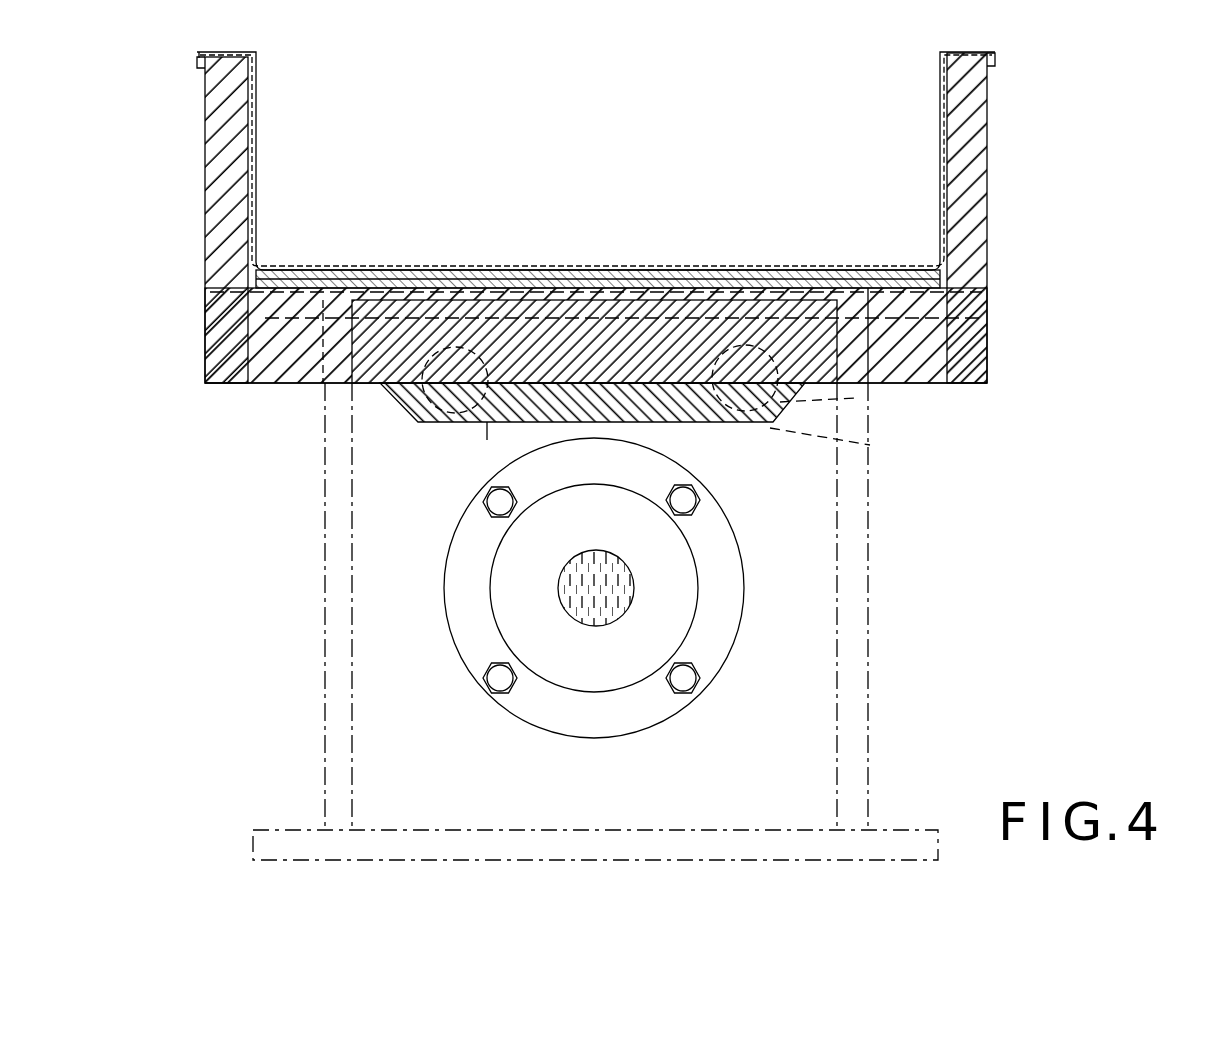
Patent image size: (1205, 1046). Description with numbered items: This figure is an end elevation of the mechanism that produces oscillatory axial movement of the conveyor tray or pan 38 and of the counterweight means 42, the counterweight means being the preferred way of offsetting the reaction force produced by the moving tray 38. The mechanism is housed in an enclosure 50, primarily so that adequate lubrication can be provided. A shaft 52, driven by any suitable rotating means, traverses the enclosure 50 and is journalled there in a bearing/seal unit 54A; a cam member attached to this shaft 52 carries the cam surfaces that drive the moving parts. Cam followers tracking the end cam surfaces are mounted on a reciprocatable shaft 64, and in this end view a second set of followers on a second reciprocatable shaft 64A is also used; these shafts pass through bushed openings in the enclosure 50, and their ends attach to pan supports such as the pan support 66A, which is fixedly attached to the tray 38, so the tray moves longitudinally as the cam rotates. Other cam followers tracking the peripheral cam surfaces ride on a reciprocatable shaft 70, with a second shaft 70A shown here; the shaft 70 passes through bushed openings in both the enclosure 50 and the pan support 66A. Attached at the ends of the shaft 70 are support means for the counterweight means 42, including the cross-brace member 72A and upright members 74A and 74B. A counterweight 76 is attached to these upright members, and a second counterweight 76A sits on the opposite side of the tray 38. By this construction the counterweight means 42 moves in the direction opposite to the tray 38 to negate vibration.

The conveyor tray or pan 38 is at (256, 135).
The counterweight means 42 is at (205, 300).
The enclosure 50 is at (872, 645).
The shaft 52 is at (581, 618).
The bearing/seal unit 54A is at (490, 598).
The reciprocatable shaft 64 is at (418, 422).
The reciprocatable shaft 64A is at (880, 408).
The pan support 66A is at (487, 437).
The reciprocatable shaft 70 is at (470, 423).
The reciprocatable shaft 70A is at (868, 450).
The cross-brace member 72A is at (272, 385).
The upright member 74A is at (215, 189).
The upright member 74B is at (972, 178).
The counterweight 76 is at (205, 133).
The second counterweight 76A is at (988, 115).